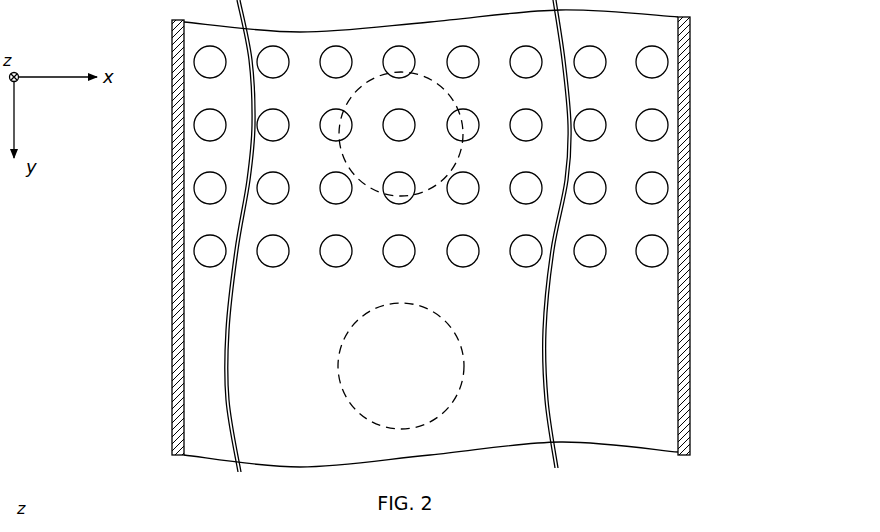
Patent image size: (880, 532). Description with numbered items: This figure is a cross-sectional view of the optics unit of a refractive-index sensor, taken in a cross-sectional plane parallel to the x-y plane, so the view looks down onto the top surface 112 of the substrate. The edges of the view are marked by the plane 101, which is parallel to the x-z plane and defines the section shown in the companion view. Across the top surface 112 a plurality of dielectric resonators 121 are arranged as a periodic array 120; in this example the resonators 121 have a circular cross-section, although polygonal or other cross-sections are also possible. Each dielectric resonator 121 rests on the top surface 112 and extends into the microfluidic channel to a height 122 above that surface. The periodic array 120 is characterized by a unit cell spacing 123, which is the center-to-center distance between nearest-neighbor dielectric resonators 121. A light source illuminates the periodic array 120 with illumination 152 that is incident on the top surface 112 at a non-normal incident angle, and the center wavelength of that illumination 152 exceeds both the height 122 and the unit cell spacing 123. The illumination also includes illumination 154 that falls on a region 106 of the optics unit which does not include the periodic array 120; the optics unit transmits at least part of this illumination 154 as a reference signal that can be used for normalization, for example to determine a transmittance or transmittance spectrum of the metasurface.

The plane 101 is at (172, 125).
The region 106 is at (693, 283).
The top surface 112 is at (614, 372).
The periodic array 120 is at (693, 33).
The dielectric resonators 121 is at (643, 110).
The height 122 is at (259, 251).
The unit cell spacing 123 is at (336, 252).
The illumination 152 is at (452, 98).
The illumination 154 is at (460, 354).